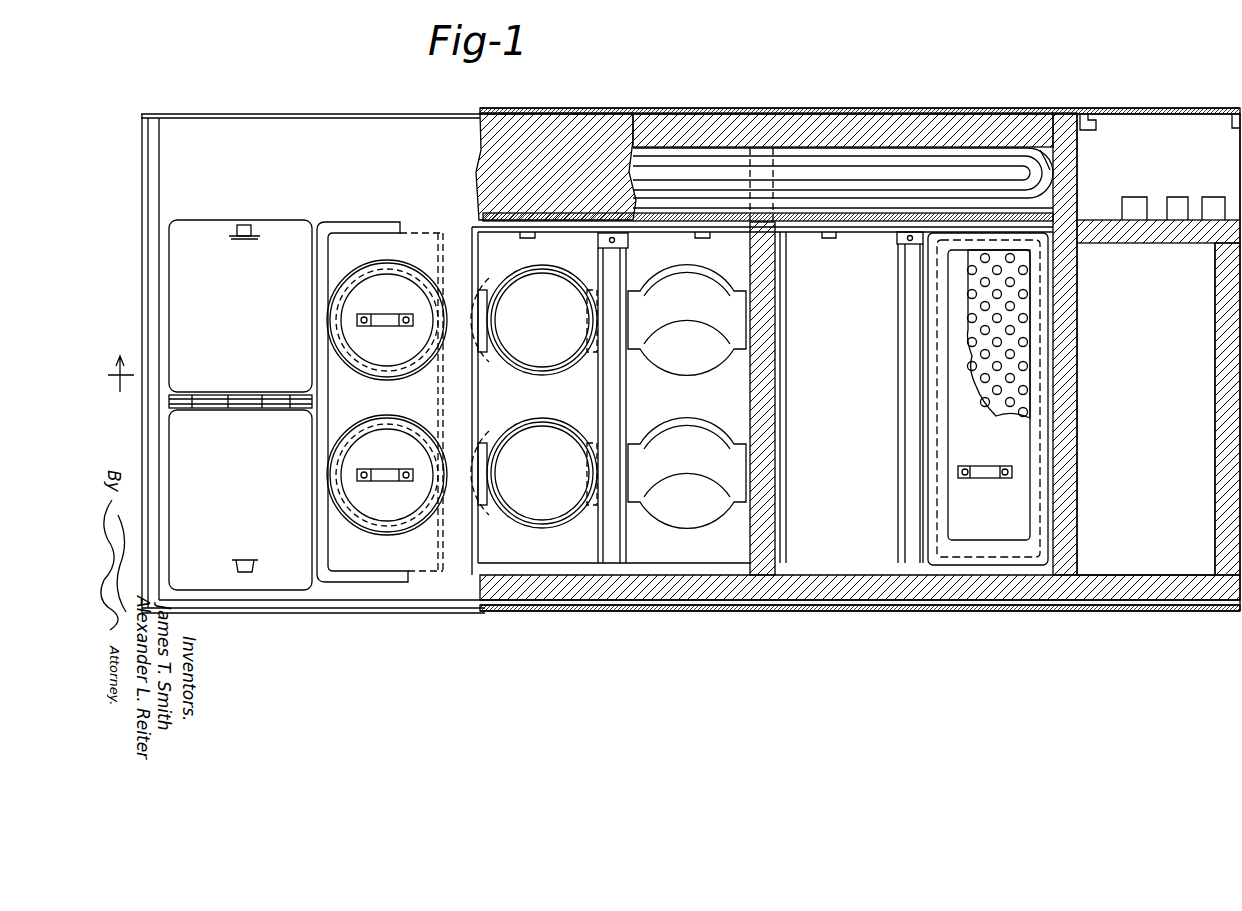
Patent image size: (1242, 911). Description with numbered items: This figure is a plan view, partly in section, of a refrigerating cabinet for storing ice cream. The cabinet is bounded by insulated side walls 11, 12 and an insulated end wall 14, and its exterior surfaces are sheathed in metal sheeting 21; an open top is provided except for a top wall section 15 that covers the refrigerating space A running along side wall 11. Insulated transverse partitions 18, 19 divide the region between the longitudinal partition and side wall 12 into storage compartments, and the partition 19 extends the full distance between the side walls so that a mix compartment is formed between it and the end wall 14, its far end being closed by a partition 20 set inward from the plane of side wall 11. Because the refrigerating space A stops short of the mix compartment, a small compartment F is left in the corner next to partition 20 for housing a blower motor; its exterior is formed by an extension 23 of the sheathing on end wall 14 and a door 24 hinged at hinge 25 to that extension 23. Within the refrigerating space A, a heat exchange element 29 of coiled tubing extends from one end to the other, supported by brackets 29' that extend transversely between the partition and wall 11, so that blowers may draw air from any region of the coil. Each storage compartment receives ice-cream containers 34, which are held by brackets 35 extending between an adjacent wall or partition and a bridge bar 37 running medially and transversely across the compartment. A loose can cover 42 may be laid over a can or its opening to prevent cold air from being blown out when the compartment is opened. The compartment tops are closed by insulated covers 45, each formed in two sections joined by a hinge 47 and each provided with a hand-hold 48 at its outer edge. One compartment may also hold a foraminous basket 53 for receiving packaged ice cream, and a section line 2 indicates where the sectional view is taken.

The section line 2 is at (111, 383).
The side wall 11 is at (816, 116).
The side wall 12 is at (720, 598).
The end wall 14 is at (1218, 313).
The top wall section 15 is at (550, 228).
The transverse partition 18 is at (770, 337).
The transverse partition 19 is at (1075, 328).
The partition 20 is at (1130, 238).
The metal sheeting 21 is at (815, 605).
The extension of sheathing sheet 23 is at (1240, 168).
The door 24 is at (1160, 112).
The hinge 25 is at (1232, 120).
The heat exchange element 29 is at (843, 143).
The brackets 29' is at (766, 149).
The ice-cream containers 34 is at (527, 440).
The brackets 35 is at (687, 412).
The bridge bar 37 is at (610, 395).
The can cover 42 is at (375, 440).
The insulated covers 45 is at (260, 292).
The hinge 47 is at (240, 400).
The hand-hold 48 is at (247, 226).
The foraminous basket 53 is at (1025, 390).
The refrigerating space A is at (1045, 150).
The compartment F is at (1148, 164).